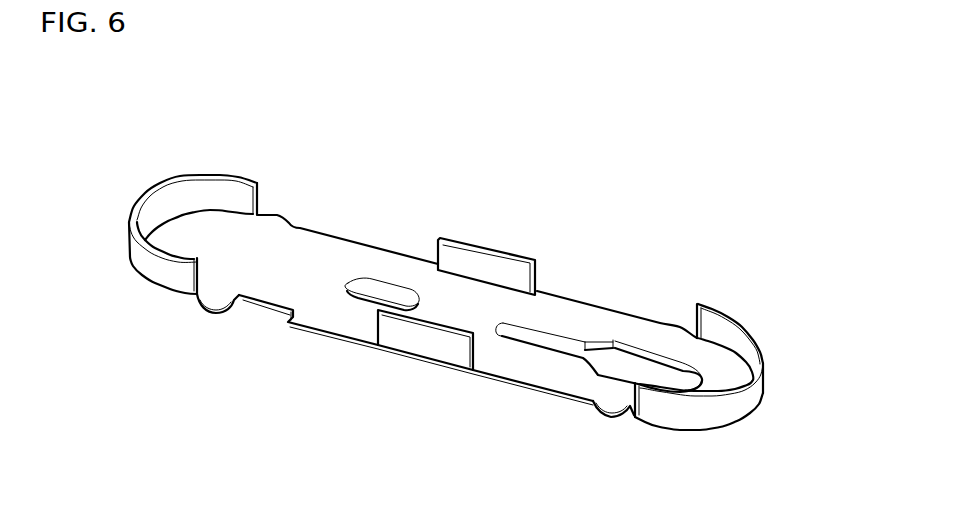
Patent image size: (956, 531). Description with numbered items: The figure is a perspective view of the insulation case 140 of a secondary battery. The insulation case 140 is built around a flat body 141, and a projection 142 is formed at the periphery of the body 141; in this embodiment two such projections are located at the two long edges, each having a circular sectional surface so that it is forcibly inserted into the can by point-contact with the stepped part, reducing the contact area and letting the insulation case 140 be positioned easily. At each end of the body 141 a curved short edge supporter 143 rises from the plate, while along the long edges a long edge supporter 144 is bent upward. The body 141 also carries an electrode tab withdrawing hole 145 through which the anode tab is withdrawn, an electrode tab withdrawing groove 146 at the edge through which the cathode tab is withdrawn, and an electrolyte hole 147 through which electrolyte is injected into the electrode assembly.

The insulation case 140 is at (645, 263).
The body 141 is at (498, 362).
The projection 142 is at (608, 422).
The short edge supporter 143 is at (157, 203).
The long edge supporter 144 is at (487, 261).
The electrode tab withdrawing hole 145 is at (612, 367).
The electrode tab withdrawing groove 146 is at (263, 303).
The electrolyte hole 147 is at (380, 297).